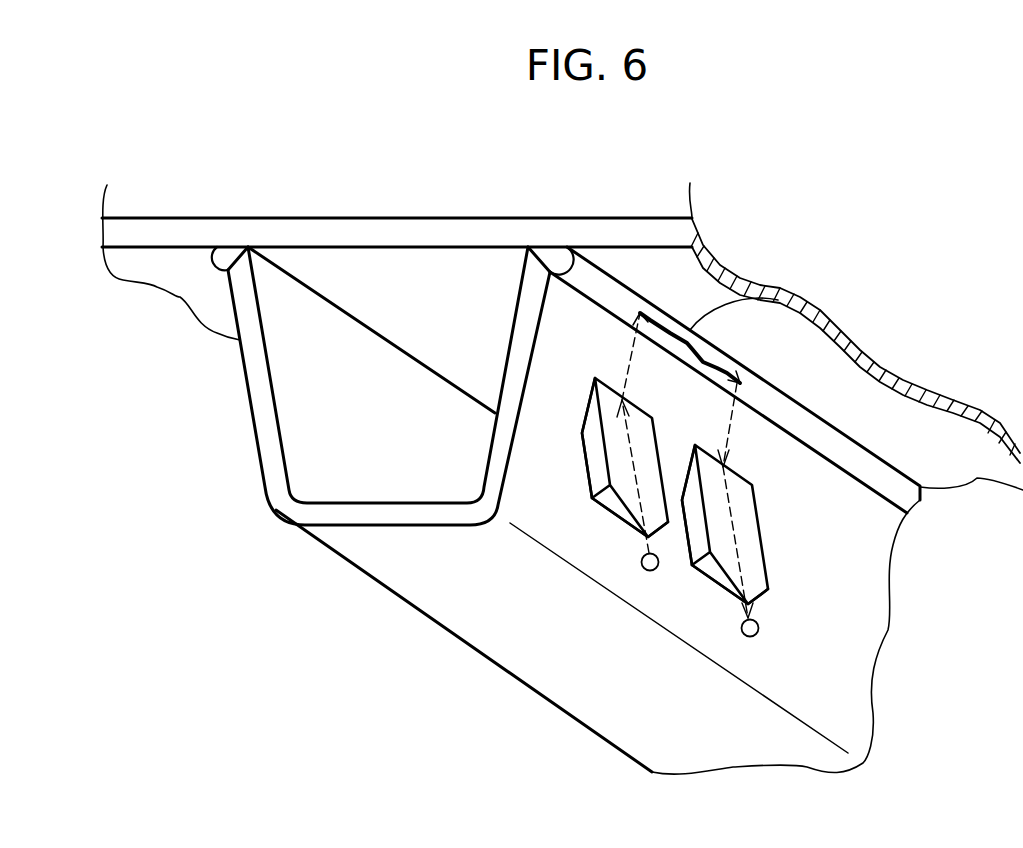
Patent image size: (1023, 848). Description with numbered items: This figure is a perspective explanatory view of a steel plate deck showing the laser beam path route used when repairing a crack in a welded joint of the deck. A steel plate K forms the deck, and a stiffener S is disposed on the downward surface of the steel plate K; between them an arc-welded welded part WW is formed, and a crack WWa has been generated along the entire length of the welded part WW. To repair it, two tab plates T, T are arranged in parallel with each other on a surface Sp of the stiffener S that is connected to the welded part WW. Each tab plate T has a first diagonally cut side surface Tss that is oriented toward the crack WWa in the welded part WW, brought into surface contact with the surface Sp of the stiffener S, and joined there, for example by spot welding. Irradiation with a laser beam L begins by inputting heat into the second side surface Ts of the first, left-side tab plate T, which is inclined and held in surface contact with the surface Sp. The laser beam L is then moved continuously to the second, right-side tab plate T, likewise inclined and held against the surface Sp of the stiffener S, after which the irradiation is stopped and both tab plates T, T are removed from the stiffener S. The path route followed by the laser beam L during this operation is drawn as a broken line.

The steel plate K is at (195, 233).
The welded part WW is at (600, 287).
The crack WWa is at (757, 295).
The stiffener S is at (362, 577).
The surface of the stiffener Sp is at (838, 653).
The tab plate T is at (617, 503).
The first diagonally cut side surface Tss is at (587, 407).
The second side surface Ts is at (593, 458).
The laser beam L is at (643, 566).